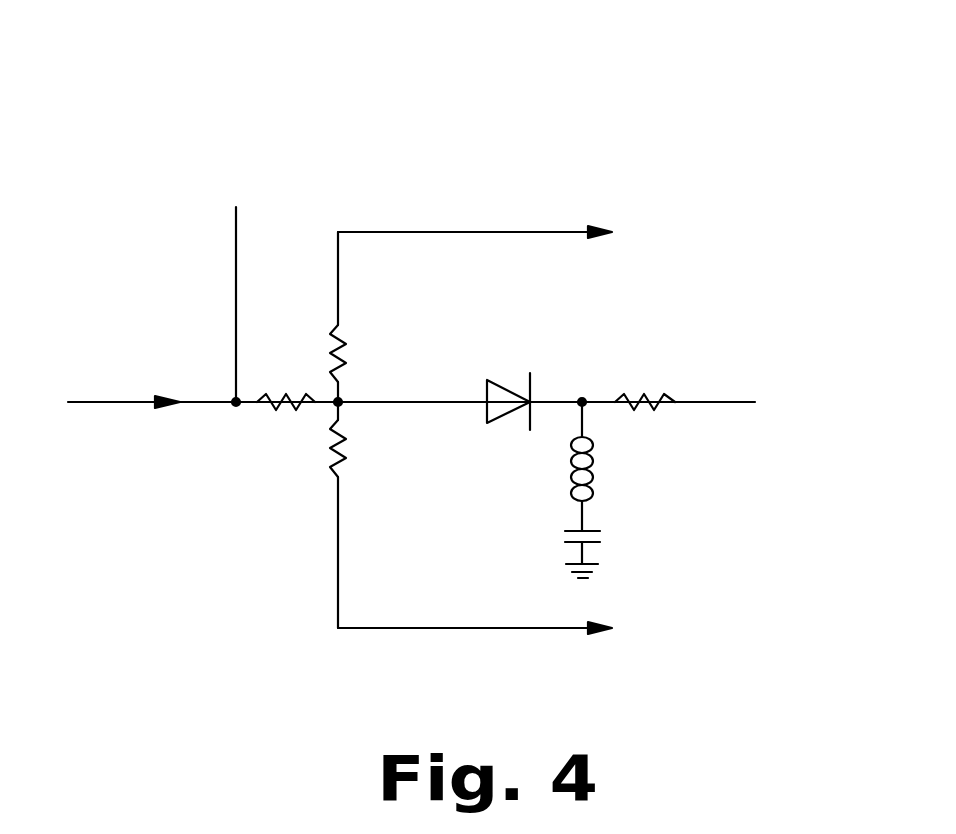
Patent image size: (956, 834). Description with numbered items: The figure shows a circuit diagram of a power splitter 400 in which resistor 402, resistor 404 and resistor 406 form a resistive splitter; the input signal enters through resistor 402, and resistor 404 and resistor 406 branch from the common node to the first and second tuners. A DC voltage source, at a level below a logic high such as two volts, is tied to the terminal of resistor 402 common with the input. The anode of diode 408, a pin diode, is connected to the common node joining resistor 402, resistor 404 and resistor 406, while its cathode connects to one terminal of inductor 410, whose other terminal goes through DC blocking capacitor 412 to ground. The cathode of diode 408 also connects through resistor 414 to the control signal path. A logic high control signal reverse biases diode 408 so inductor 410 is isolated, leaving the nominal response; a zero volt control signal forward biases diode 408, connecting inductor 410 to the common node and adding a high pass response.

The power splitter 400 is at (175, 103).
The resistor 402 is at (314, 400).
The resistor 404 is at (343, 358).
The resistor 406 is at (336, 440).
The diode 408 is at (514, 392).
The inductor 410 is at (570, 480).
The capacitor 412 is at (564, 541).
The resistor 414 is at (648, 398).